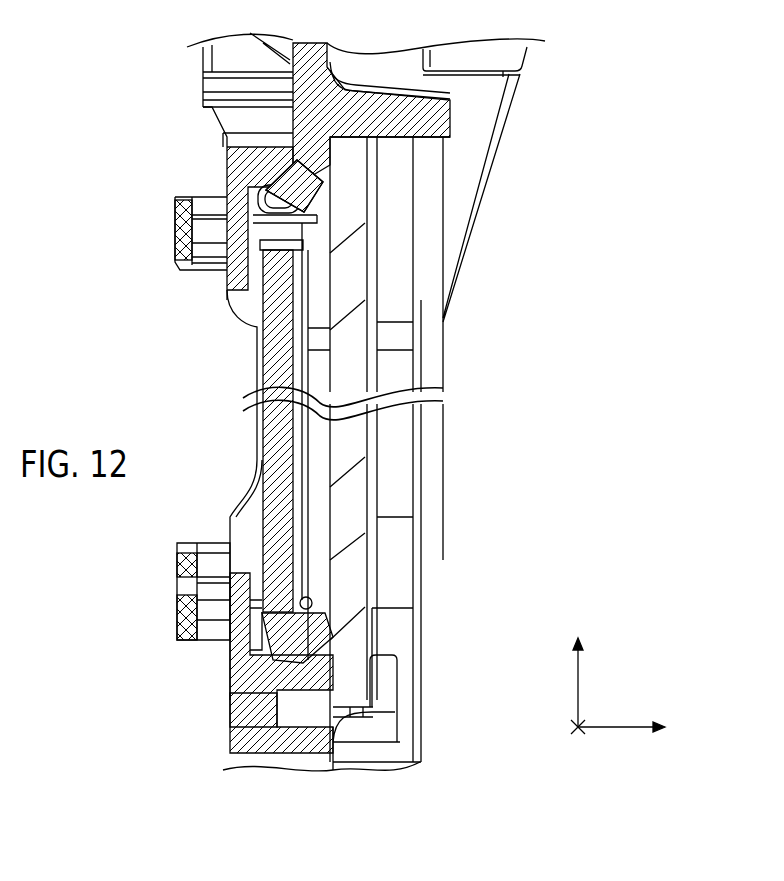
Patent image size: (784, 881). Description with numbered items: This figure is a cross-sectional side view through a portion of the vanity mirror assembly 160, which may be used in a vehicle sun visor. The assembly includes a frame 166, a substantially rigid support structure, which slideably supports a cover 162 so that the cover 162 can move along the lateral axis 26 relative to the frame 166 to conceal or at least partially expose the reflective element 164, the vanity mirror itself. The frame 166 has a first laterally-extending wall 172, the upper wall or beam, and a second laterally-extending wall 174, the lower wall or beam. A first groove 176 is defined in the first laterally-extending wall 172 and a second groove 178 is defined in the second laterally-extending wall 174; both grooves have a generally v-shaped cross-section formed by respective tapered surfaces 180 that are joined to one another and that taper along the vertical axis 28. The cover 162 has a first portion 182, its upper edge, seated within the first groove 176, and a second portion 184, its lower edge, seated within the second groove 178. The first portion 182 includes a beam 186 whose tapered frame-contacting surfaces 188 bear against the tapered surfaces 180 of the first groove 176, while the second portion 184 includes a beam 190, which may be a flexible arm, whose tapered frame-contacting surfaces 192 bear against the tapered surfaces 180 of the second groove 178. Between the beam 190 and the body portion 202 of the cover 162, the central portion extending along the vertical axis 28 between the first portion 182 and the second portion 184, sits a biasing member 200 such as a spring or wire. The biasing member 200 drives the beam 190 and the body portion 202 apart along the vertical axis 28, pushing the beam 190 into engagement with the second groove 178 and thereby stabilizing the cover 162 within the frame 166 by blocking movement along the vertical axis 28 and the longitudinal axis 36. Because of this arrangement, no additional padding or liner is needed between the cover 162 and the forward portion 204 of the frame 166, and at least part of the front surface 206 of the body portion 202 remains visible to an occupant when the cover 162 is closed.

The vanity mirror assembly 160 is at (532, 178).
The cover 162 is at (273, 353).
The reflective element 164 is at (352, 658).
The frame 166 is at (406, 119).
The first laterally-extending wall 172 is at (371, 113).
The second laterally-extending wall 174 is at (308, 742).
The first groove 176 is at (285, 180).
The second groove 178 is at (283, 688).
The tapered surfaces 180 is at (263, 200).
The first portion 182 is at (313, 238).
The second portion 184 is at (296, 598).
The beam 186 is at (305, 190).
The tapered frame-contacting surfaces 188 is at (262, 210).
The beam 190 is at (313, 627).
The tapered frame-contacting surfaces 192 is at (307, 662).
The biasing member 200 is at (312, 600).
The body portion 202 is at (277, 386).
The forward portion 204 is at (240, 248).
The front surface 206 is at (263, 437).
The lateral axis 26 is at (618, 727).
The vertical axis 28 is at (578, 690).
The longitudinal axis 36 is at (575, 730).